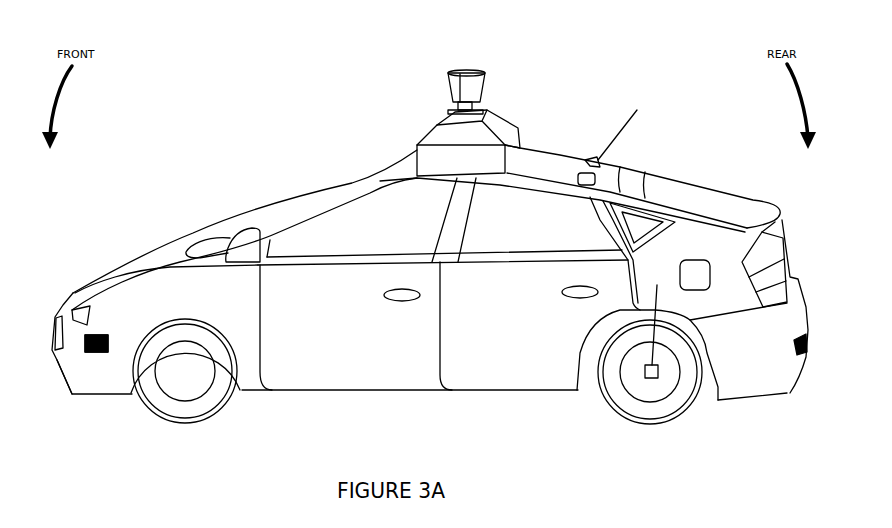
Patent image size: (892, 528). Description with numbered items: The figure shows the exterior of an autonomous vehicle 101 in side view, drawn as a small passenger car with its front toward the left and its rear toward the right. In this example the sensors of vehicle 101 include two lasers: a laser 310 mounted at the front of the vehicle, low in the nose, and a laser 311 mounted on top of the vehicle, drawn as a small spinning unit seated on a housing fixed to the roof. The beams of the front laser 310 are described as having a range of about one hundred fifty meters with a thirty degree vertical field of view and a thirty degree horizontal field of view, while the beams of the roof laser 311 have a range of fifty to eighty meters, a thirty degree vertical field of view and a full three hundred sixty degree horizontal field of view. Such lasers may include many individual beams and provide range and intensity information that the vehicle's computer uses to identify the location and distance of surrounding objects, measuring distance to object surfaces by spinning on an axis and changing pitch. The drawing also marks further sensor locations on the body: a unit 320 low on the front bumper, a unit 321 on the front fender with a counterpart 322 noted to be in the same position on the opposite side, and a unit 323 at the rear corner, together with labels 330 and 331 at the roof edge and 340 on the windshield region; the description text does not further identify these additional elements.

The vehicle 101 is at (226, 38).
The laser 310 is at (50, 317).
The laser 311 is at (450, 76).
The front lower sensor 320 is at (62, 372).
The side sensor 321 is at (97, 352).
The side sensor on opposite side 322 is at (97, 352).
The rear sensor 323 is at (808, 358).
The roof 330 is at (345, 181).
The windshield 331 is at (345, 181).
The hood 340 is at (298, 207).